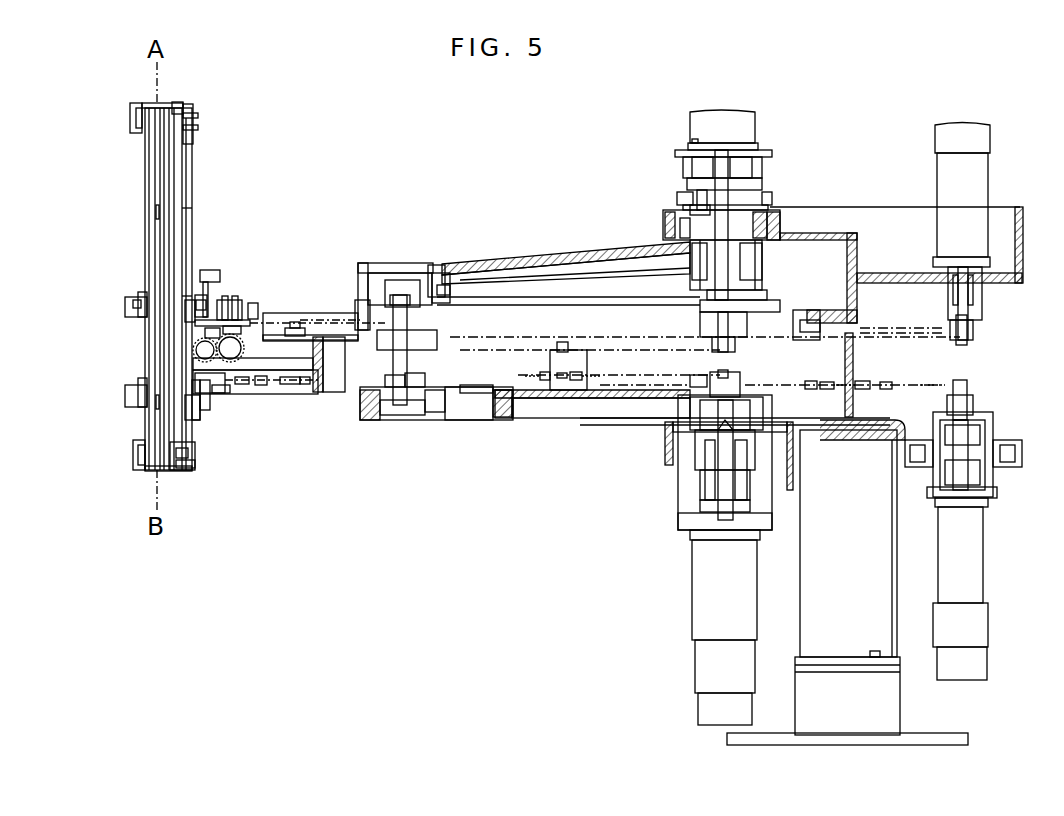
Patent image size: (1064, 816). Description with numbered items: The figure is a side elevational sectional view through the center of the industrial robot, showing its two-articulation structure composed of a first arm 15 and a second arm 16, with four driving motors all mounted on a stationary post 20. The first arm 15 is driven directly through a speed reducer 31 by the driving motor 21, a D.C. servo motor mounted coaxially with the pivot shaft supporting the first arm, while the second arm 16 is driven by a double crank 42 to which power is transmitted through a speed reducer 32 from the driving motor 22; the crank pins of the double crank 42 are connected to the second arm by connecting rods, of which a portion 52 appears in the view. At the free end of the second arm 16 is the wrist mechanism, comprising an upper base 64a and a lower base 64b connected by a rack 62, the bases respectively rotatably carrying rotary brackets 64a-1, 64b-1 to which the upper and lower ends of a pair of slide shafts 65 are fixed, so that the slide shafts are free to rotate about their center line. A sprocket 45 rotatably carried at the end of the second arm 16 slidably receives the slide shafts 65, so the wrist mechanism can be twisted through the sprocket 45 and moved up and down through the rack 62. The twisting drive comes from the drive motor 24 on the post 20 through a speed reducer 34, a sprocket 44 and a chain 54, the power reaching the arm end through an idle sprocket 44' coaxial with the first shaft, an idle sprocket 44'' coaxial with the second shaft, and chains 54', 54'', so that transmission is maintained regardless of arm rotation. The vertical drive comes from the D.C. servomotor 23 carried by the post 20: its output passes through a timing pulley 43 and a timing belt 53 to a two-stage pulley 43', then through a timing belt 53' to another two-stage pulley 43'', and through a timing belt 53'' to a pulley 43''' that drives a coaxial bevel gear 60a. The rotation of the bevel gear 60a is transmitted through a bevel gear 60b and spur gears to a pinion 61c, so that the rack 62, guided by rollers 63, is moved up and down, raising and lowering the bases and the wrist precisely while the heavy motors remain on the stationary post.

The first arm 15 is at (538, 268).
The second arm 16 is at (325, 402).
The stationary post 20 is at (820, 233).
The driving motor 21 is at (695, 604).
The driving motor 22 is at (755, 123).
The D.C. servomotor 23 is at (940, 178).
The drive motor 24 is at (983, 590).
The speed reducer 31 is at (680, 480).
The speed reducer 32 is at (693, 198).
The speed reducer 34 is at (995, 422).
The double crank 42 is at (690, 285).
The timing pulley 43 is at (990, 330).
The two-stage pulley 43' is at (684, 332).
The two-stage pulley 43'' is at (386, 327).
The pulley 43''' is at (245, 306).
The sprocket 44 is at (990, 387).
The idle sprocket 44' is at (700, 373).
The idle sprocket 44'' is at (436, 412).
The sprocket 45 is at (138, 386).
The plate 52 is at (490, 282).
The timing belt 53 is at (902, 308).
The timing belt 53' is at (486, 403).
The timing belt 53'' is at (317, 312).
The chain 54 is at (872, 373).
The chain 54' is at (544, 366).
The chain 54'' is at (284, 405).
The bevel gear 60a is at (250, 338).
The bevel gear 60b is at (218, 362).
The pinion 61c is at (218, 362).
The rack 62 is at (190, 224).
The rollers 63 is at (200, 280).
The upper base 64a is at (131, 120).
The rotary bracket 64a-1 is at (135, 137).
The lower base 64b is at (133, 453).
The rotary bracket 64b-1 is at (145, 447).
The slide shafts 65 is at (150, 234).